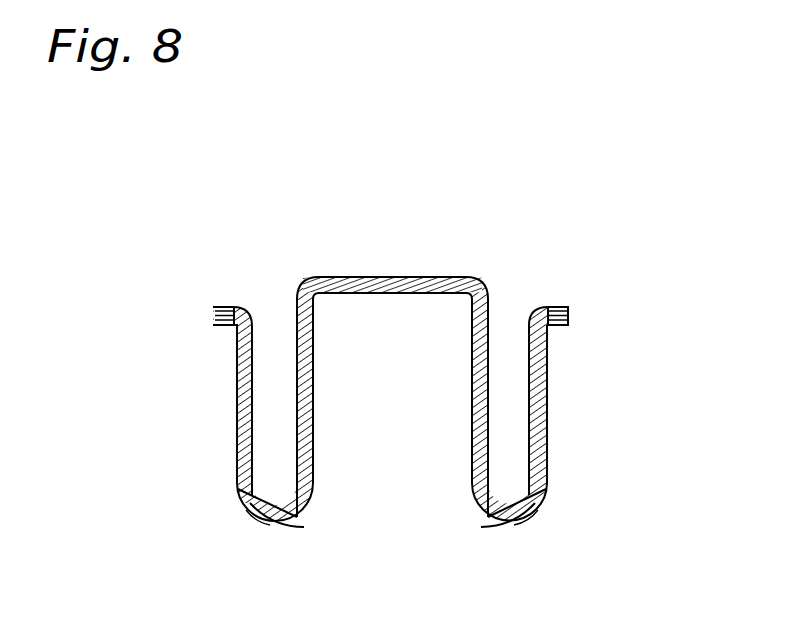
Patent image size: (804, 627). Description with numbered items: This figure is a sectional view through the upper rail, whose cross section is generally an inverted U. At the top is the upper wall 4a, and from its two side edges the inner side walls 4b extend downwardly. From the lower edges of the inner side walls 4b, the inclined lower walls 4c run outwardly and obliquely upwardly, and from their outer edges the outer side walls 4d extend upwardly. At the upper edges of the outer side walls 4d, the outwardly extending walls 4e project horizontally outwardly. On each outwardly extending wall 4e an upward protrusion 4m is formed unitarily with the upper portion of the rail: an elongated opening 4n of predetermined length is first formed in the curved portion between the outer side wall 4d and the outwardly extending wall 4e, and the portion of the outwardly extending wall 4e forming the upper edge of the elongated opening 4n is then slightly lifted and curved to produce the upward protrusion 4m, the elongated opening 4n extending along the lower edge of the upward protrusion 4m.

The upper wall 4a is at (395, 277).
The inner side wall 4b is at (470, 433).
The inclined lower wall 4c is at (528, 512).
The outer side wall 4d is at (548, 432).
The outwardly extending wall 4e is at (557, 327).
The upward protrusion 4m is at (559, 307).
The elongated opening 4n is at (534, 318).